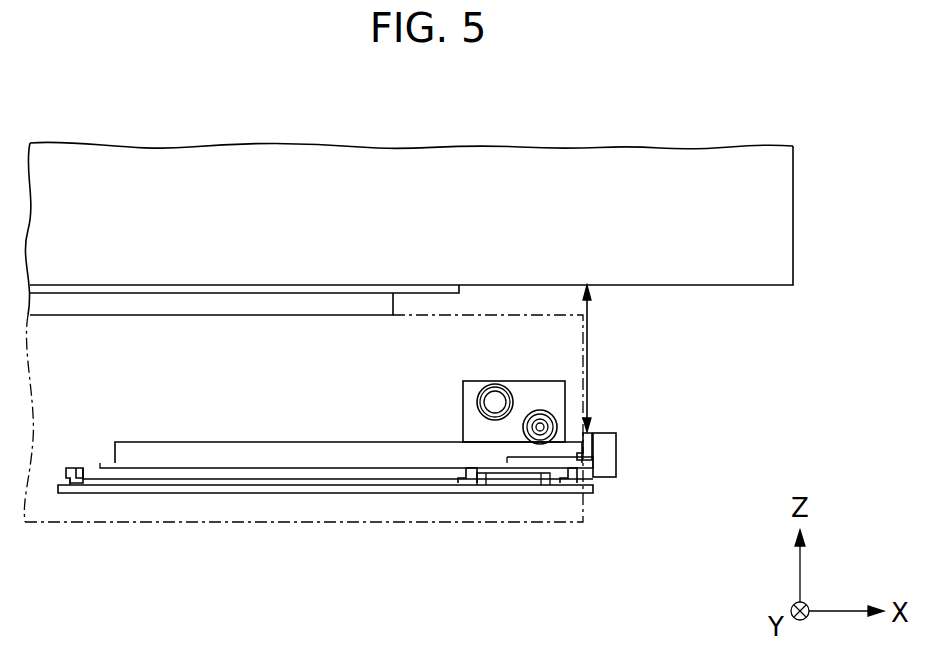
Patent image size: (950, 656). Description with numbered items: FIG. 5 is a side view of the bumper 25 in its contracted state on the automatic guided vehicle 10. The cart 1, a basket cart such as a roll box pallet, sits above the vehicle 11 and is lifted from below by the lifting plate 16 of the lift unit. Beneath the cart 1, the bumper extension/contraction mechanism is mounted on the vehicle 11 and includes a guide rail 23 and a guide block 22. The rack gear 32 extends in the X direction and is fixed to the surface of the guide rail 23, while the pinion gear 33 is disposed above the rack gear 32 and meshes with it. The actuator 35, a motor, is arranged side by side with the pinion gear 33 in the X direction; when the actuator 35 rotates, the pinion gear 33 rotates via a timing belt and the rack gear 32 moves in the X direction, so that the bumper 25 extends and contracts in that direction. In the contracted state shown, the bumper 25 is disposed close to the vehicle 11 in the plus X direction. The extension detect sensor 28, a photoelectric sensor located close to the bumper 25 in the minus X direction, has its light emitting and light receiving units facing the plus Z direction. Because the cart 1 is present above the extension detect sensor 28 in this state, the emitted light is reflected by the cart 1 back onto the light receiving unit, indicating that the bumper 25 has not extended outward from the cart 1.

The cart 1 is at (793, 213).
The lifting plate 16 is at (130, 305).
The actuator 35 is at (494, 381).
The pinion gear 33 is at (548, 415).
The rack gear 32 is at (427, 441).
The bumper 25 is at (616, 437).
The extension detect sensor 28 is at (587, 448).
The guide rail 23 is at (148, 473).
The guide block 22 is at (513, 481).
The automatic guided vehicle 10 is at (447, 520).
The vehicle 11 is at (58, 523).